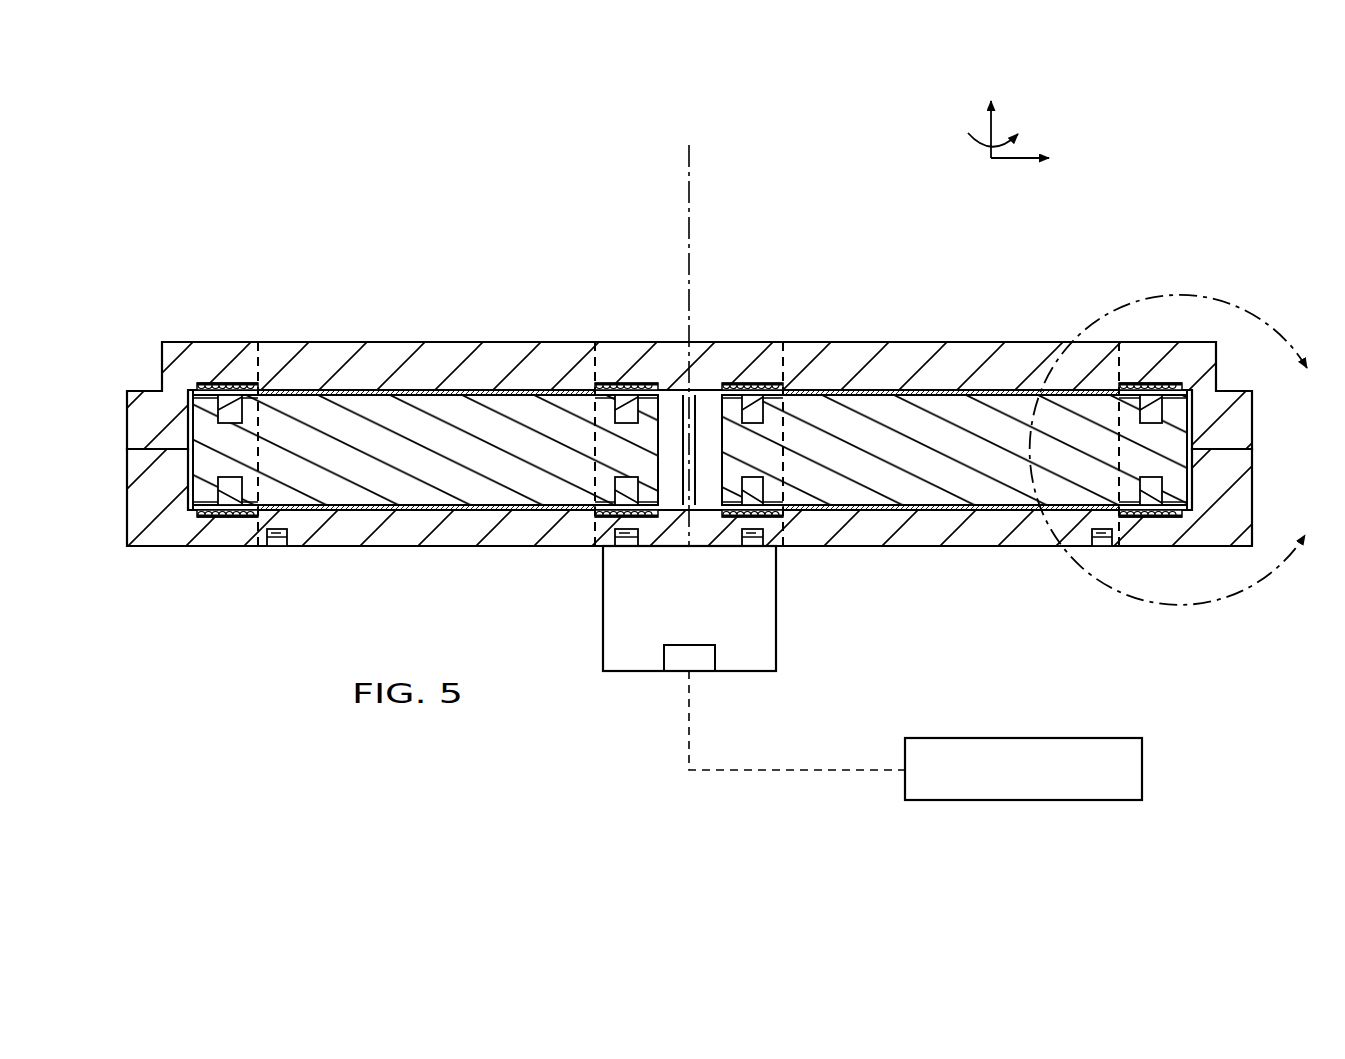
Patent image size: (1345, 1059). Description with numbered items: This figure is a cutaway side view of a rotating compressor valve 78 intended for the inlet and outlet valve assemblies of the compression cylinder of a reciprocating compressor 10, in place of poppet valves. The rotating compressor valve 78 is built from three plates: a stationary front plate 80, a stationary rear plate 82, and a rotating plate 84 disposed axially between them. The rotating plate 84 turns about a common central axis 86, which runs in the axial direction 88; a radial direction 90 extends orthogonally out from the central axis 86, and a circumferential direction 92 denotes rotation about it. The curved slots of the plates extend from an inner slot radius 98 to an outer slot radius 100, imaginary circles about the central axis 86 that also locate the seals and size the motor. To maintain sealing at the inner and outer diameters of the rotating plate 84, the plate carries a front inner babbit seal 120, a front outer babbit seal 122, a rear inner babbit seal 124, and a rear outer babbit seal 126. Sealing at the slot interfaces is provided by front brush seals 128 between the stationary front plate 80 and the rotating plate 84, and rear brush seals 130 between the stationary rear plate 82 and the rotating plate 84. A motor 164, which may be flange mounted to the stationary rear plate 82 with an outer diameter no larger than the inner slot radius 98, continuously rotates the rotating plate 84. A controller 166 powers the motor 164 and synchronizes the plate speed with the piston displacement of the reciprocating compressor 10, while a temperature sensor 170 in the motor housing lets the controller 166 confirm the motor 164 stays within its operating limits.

The reciprocating compressor 10 is at (1185, 450).
The rotating compressor valve 78 is at (1148, 202).
The stationary front plate 80 is at (135, 420).
The stationary rear plate 82 is at (135, 503).
The rotating plate 84 is at (352, 492).
The central axis 86 is at (687, 158).
The axial direction 88 is at (990, 128).
The radial direction 90 is at (1012, 160).
The circumferential direction 92 is at (974, 140).
The inner slot radius 98 is at (594, 383).
The outer slot radius 100 is at (265, 390).
The front inner babbit seal 120 is at (591, 376).
The front outer babbit seal 122 is at (206, 378).
The rear inner babbit seal 124 is at (590, 517).
The rear outer babbit seal 126 is at (214, 522).
The front brush seals 128 is at (420, 392).
The rear brush seals 130 is at (433, 513).
The motor 164 is at (776, 645).
The controller 166 is at (1023, 738).
The temperature sensor 170 is at (702, 657).